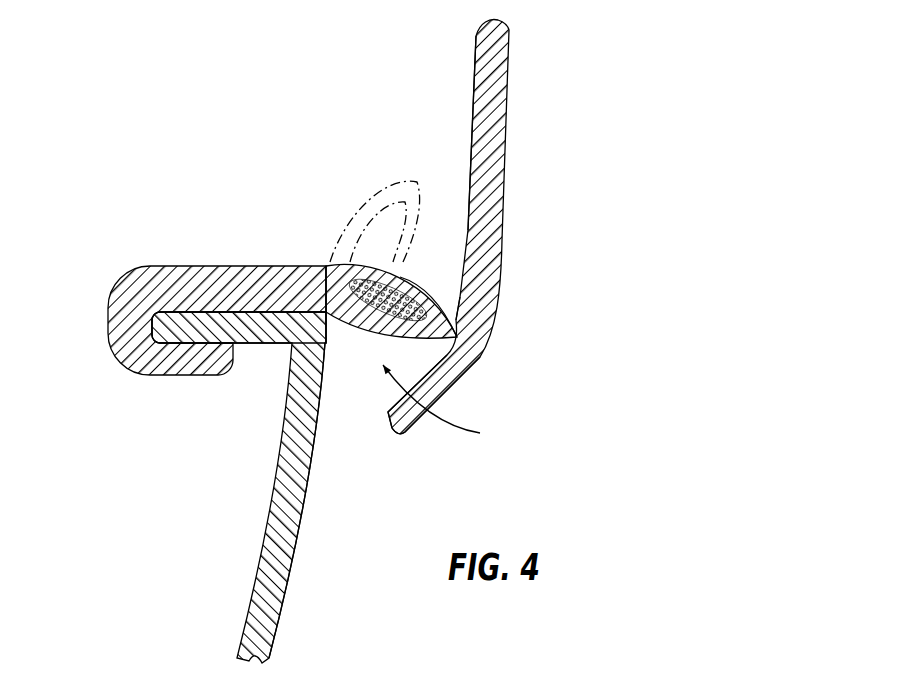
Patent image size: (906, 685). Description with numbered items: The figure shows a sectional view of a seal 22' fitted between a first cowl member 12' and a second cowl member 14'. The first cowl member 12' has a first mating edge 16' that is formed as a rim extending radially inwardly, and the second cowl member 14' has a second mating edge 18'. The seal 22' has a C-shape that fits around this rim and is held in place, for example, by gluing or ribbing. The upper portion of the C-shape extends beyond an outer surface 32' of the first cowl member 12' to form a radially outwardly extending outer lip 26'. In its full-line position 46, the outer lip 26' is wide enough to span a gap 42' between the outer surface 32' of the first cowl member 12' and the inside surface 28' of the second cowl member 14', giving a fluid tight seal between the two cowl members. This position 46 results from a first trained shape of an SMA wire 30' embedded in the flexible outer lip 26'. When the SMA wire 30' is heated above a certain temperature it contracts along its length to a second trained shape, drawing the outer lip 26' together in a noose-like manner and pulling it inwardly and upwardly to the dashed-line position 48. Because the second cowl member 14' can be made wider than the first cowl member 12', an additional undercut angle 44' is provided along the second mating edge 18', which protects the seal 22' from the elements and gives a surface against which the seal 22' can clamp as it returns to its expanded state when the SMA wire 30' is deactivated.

The first cowl member 12' is at (265, 487).
The second cowl member 14' is at (487, 227).
The first mating edge 16' is at (239, 375).
The second mating edge 18' is at (434, 425).
The seal 22' is at (185, 330).
The outer lip 26' is at (450, 288).
The inside surface 28' is at (447, 133).
The SMA wire 30' is at (486, 307).
The outer surface 32' is at (309, 500).
The gap 42' is at (444, 407).
The undercut angle 44' is at (483, 355).
The position 46 is at (336, 287).
The position 48 is at (362, 195).